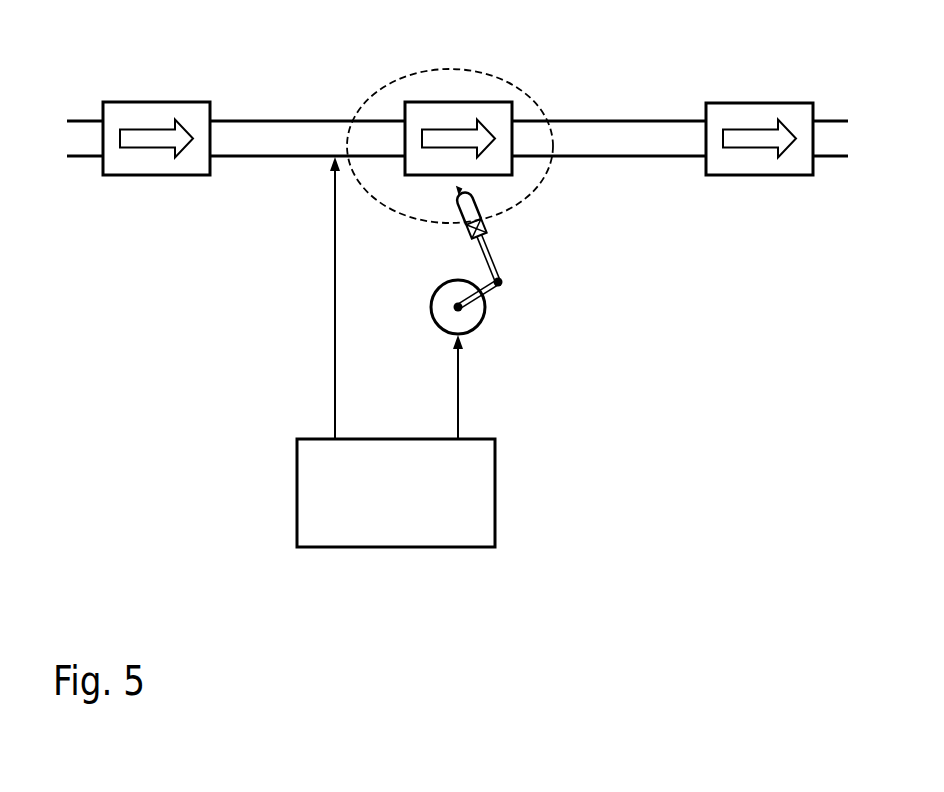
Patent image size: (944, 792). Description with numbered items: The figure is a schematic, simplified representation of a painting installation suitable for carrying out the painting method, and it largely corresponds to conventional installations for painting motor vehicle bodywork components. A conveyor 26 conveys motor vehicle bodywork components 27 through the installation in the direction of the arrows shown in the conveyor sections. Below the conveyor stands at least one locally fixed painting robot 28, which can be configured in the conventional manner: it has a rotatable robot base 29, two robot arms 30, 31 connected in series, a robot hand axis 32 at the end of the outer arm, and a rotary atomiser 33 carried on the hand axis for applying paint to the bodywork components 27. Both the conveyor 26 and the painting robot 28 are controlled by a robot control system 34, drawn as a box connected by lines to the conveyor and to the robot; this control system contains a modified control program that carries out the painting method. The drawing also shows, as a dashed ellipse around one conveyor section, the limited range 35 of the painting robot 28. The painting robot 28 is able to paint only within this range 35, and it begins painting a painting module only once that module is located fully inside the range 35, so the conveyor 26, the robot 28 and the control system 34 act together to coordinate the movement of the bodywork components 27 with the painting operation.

The conveyor 26 is at (645, 120).
The motor vehicle bodywork component 27 is at (157, 102).
The painting robot 28 is at (477, 248).
The rotatable robot base 29 is at (432, 327).
The robot arm 30 is at (490, 293).
The robot arm 31 is at (500, 268).
The robot hand axis 32 is at (466, 232).
The rotary atomiser 33 is at (462, 208).
The robot control system 34 is at (297, 468).
The range 35 is at (464, 68).